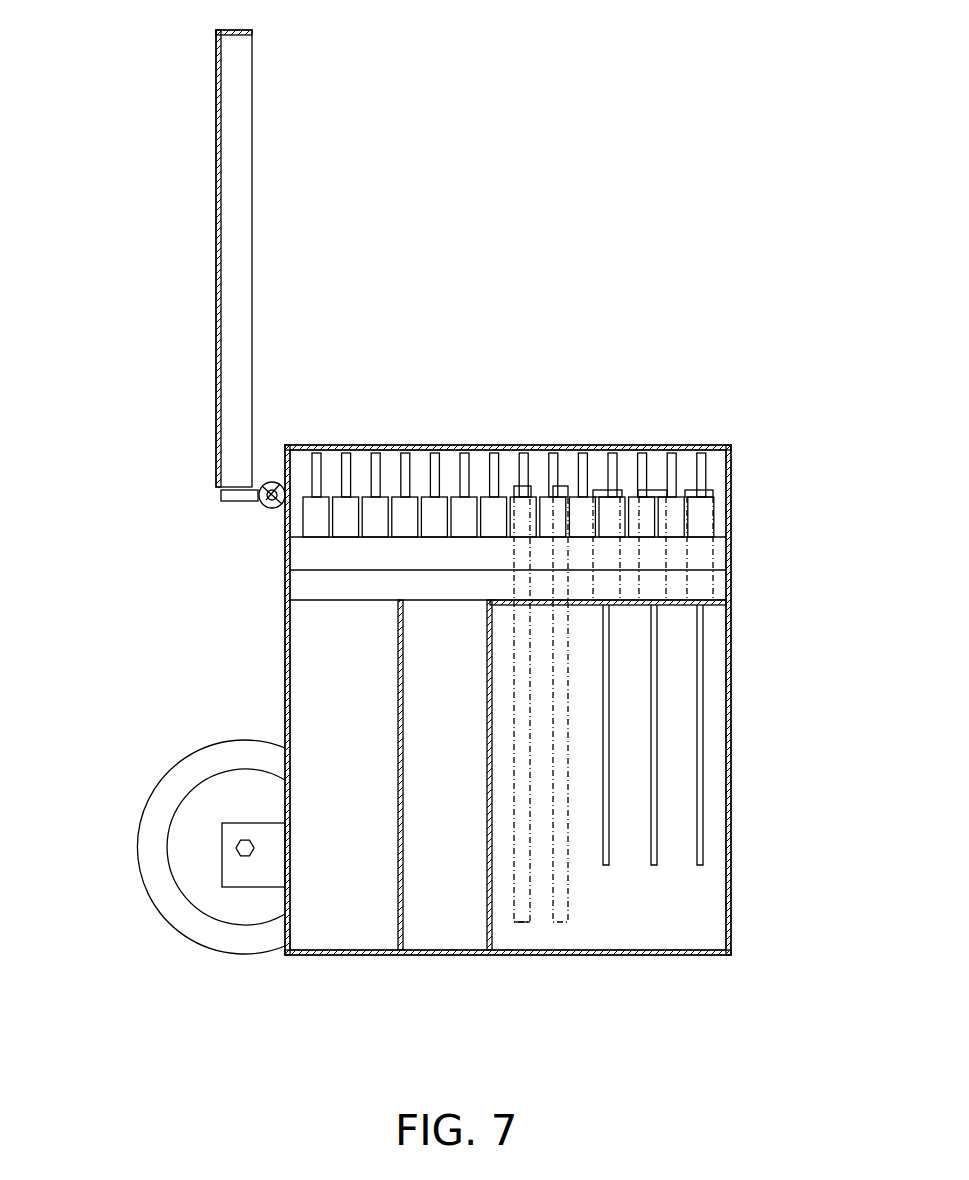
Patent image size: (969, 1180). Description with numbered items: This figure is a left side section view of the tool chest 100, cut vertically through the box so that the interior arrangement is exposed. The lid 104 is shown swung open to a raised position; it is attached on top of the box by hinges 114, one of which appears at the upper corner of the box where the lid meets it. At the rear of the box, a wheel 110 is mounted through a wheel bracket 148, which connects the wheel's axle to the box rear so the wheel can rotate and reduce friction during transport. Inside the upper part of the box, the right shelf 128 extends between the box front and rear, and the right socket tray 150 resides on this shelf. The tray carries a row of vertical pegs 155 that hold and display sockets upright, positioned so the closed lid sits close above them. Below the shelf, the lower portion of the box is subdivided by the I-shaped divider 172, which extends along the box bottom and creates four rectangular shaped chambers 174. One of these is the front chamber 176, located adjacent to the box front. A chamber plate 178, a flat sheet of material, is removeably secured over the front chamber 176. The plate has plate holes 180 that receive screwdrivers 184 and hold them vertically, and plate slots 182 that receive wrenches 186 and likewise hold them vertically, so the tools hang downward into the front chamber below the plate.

The tool chest 100 is at (733, 920).
The lid 104 is at (213, 268).
The wheels 110 is at (153, 873).
The hinges 114 is at (262, 502).
The right shelf 128 is at (350, 568).
The wheel brackets 148 is at (246, 888).
The right socket tray 150 is at (405, 556).
The vertical pegs 155 is at (466, 462).
The I-shaped divider 172 is at (490, 708).
The rectangular shaped chambers 174 is at (363, 935).
The front chamber 176 is at (674, 932).
The chamber plate 178 is at (706, 605).
The plate holes 180 is at (608, 605).
The plate slots 182 is at (518, 605).
The screwdrivers 184 is at (698, 862).
The wrenches 186 is at (559, 925).